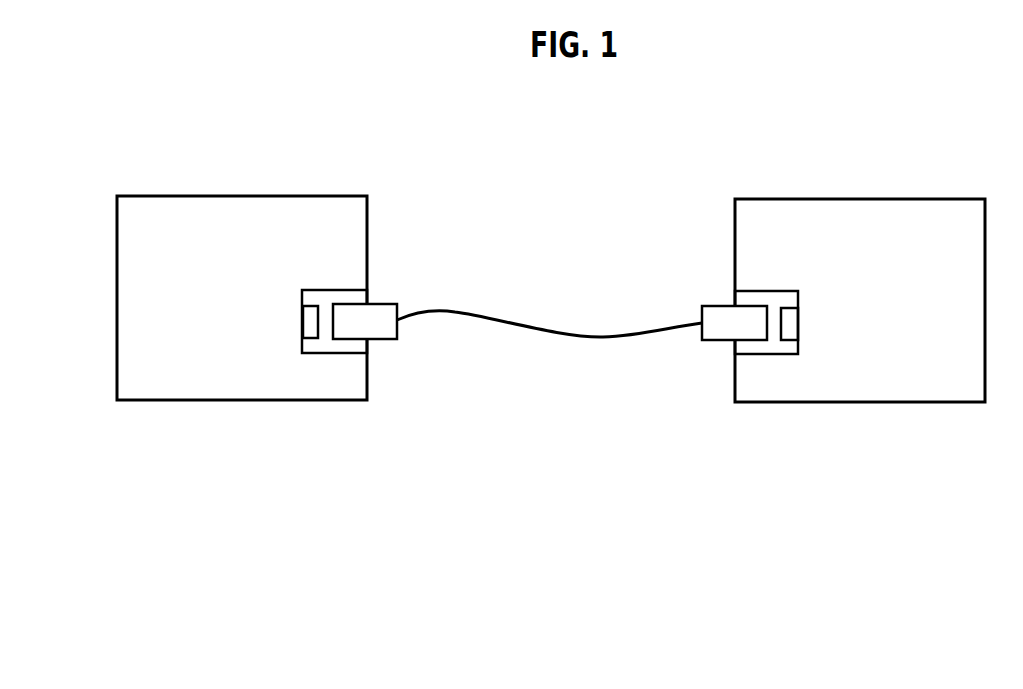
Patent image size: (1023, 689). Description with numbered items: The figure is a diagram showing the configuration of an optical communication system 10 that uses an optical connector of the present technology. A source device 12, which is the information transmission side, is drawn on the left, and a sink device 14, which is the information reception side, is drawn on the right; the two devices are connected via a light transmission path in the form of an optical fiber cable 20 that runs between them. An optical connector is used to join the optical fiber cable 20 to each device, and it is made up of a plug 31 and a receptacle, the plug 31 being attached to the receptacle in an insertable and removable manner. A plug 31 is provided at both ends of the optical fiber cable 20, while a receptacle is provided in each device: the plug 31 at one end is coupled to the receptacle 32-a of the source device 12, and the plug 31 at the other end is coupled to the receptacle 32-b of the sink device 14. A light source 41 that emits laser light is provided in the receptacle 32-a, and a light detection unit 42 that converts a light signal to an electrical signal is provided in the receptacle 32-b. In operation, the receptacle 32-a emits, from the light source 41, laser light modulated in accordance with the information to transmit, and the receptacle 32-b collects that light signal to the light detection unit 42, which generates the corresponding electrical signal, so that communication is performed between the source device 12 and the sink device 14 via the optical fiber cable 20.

The optical communication system 10 is at (551, 388).
The source device 12 is at (243, 194).
The sink device 14 is at (860, 198).
The optical fiber cable 20 is at (567, 338).
The plug 31 is at (395, 305).
The receptacle of the source device 32-a is at (331, 353).
The receptacle of the sink device 32-b is at (767, 355).
The light source 41 is at (312, 320).
The light detection unit 42 is at (787, 325).